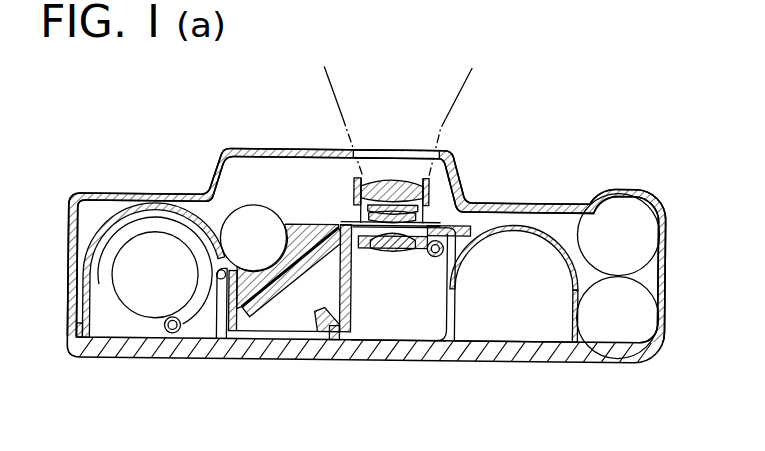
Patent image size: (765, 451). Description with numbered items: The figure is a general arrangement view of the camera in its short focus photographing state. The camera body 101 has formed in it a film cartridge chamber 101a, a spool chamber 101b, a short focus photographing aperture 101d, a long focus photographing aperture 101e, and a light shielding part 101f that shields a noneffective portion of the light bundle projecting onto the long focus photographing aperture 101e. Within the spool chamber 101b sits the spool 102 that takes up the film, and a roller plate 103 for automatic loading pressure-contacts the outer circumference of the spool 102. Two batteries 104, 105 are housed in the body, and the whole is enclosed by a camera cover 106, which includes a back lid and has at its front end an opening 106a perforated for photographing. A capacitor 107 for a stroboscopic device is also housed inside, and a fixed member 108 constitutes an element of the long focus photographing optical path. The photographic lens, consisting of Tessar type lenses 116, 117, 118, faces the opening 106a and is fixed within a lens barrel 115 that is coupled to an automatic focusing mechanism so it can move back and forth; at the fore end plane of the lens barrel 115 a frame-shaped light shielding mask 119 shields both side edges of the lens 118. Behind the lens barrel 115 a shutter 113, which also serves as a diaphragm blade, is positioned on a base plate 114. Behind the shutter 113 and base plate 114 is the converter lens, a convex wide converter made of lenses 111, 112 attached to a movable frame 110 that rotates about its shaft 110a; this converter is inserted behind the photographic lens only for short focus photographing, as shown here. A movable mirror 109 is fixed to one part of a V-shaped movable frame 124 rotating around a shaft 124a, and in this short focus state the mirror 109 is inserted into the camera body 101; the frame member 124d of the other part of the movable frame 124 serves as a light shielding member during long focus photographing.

The camera body 101 is at (528, 220).
The film cartridge chamber 101a is at (507, 326).
The spool chamber 101b is at (112, 328).
The short focus photographing aperture 101d is at (387, 340).
The long focus photographing aperture 101e is at (240, 336).
The light shielding part 101f is at (307, 330).
The spool 102 is at (150, 321).
The roller plate 103 is at (192, 325).
The battery 104 is at (640, 316).
The battery 105 is at (640, 227).
The camera cover 106 is at (568, 361).
The opening for photographing 106a is at (392, 150).
The capacitor 107 is at (238, 219).
The fixed member 108 is at (297, 223).
The movable mirror 109 is at (293, 270).
The movable frame 110 is at (428, 256).
The shaft 110a is at (446, 252).
The lens 111 is at (377, 249).
The lens 112 is at (405, 250).
The shutter 113 is at (446, 223).
The base plate 114 is at (498, 210).
The lens barrel 115 is at (433, 193).
The lens 116 is at (362, 222).
The lens 117 is at (410, 178).
The lens 118 is at (355, 178).
The light shielding mask 119 is at (353, 184).
The movable frame 124 is at (352, 290).
The shaft 124a is at (338, 333).
The frame member 124d is at (242, 300).